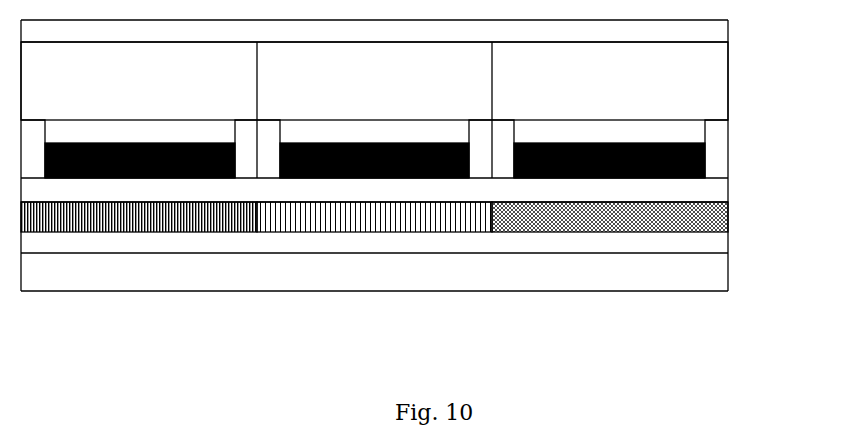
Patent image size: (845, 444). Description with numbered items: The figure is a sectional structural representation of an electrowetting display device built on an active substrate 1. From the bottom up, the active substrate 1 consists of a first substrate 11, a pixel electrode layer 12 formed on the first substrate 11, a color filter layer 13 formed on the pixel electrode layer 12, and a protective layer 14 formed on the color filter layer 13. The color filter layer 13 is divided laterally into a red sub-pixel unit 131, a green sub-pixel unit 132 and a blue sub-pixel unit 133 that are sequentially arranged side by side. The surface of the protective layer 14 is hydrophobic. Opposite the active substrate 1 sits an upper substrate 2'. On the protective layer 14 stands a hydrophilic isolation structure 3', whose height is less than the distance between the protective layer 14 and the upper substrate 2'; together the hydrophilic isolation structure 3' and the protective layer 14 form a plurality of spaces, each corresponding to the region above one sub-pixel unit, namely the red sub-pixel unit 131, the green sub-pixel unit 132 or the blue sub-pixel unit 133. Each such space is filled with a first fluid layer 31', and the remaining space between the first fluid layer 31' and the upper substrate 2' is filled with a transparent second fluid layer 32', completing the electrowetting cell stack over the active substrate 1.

The upper substrate 2' is at (398, 31).
The transparent second fluid layer 32' is at (403, 81).
The hydrophilic isolation structure 3' is at (401, 110).
The first fluid layer 31' is at (417, 160).
The protective layer 14 is at (717, 191).
The color filter layer 13 is at (374, 282).
The red sub-pixel unit 131 is at (193, 220).
The green sub-pixel unit 132 is at (427, 220).
The blue sub-pixel unit 133 is at (610, 264).
The pixel electrode layer 12 is at (717, 243).
The first substrate 11 is at (717, 281).
The active substrate 1 is at (792, 190).